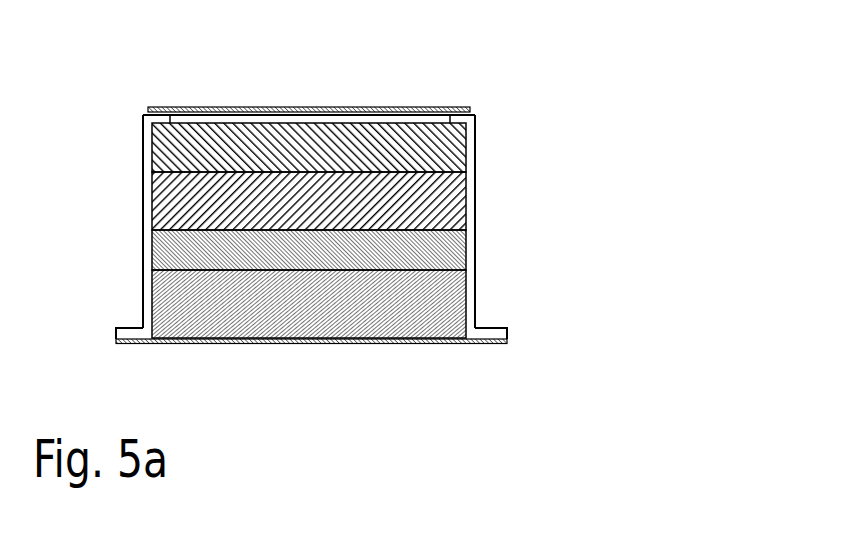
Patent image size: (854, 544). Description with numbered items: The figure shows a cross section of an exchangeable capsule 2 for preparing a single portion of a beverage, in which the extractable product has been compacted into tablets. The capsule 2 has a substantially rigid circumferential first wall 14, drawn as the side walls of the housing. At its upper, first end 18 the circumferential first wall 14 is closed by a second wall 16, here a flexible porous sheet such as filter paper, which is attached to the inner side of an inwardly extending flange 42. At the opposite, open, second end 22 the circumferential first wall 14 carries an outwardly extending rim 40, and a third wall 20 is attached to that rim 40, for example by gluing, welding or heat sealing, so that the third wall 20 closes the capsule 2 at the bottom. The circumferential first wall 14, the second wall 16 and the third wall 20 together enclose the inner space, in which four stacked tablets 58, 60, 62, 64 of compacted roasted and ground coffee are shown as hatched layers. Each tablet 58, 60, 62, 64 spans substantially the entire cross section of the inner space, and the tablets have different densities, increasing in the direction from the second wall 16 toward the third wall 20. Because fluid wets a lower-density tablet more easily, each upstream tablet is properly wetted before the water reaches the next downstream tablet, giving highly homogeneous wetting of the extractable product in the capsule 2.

The exchangeable capsule 2 is at (668, 393).
The circumferential first wall 14 is at (470, 223).
The second wall 16 is at (422, 107).
The first end 18 is at (468, 135).
The third wall 20 is at (437, 345).
The second end 22 is at (470, 312).
The outwardly extending rim 40 is at (495, 337).
The inwardly extending flange 42 is at (458, 122).
The tablet 58 is at (158, 153).
The tablet 60 is at (158, 205).
The tablet 62 is at (165, 258).
The tablet 64 is at (165, 300).